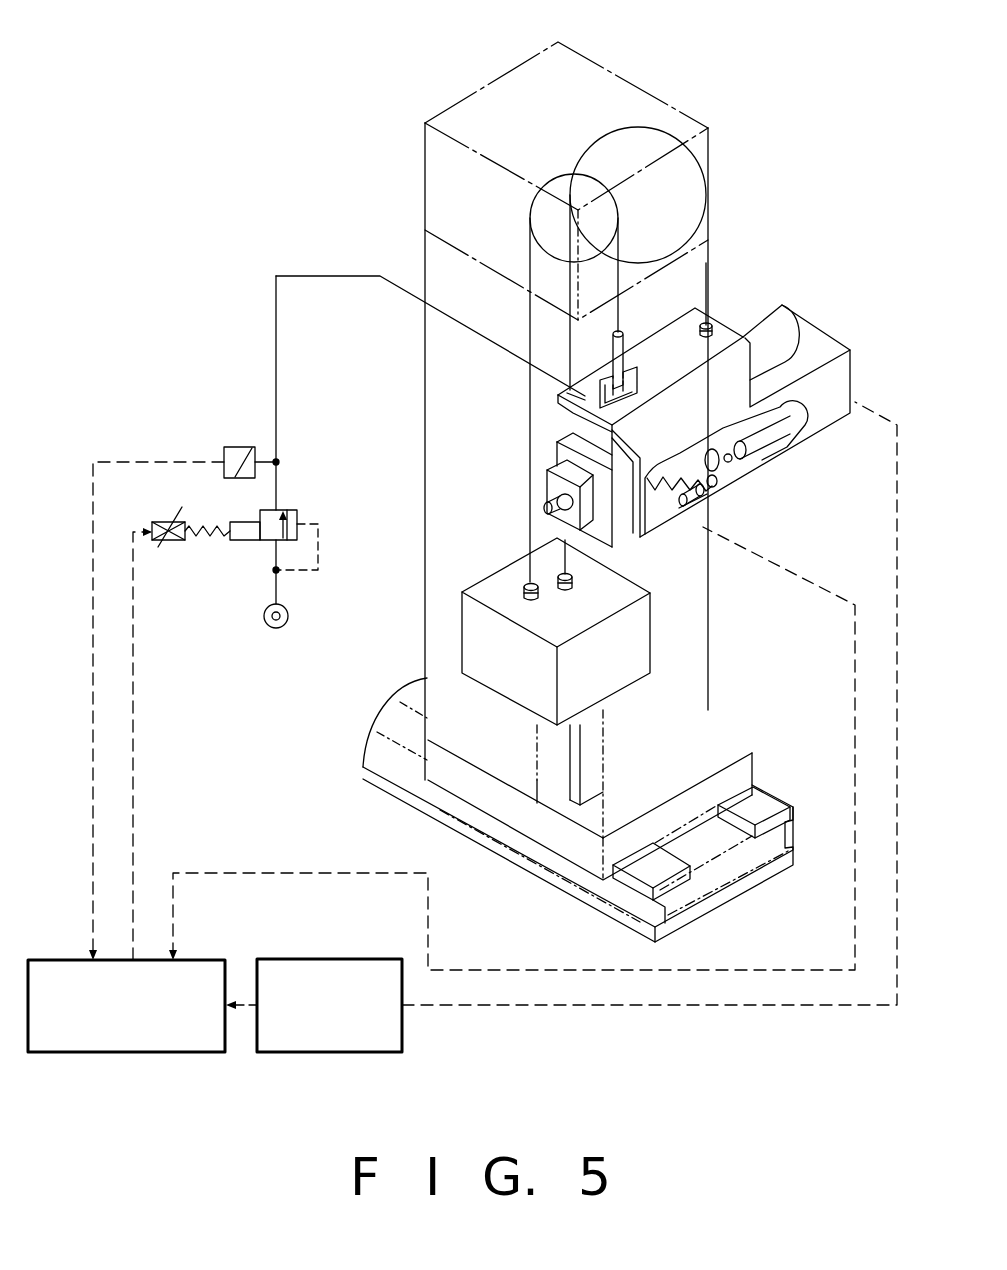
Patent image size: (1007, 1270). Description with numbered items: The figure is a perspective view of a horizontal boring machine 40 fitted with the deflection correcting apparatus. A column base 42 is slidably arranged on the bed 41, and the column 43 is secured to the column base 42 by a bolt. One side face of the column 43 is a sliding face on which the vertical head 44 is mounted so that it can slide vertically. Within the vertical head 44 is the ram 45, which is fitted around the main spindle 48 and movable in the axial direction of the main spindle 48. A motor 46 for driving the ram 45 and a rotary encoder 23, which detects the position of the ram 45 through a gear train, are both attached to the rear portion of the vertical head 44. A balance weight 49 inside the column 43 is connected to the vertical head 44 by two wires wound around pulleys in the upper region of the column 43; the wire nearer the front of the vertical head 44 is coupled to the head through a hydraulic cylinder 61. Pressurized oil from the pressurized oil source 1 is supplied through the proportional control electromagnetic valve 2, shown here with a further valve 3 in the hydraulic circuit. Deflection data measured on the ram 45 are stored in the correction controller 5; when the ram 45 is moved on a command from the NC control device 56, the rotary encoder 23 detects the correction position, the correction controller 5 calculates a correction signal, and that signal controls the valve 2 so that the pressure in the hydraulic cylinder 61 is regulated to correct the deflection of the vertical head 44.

The pressurized oil source 1 is at (288, 618).
The proportional control electromagnetic valve 2 is at (236, 541).
The flow control valve 3 is at (244, 447).
The correction controller 5 is at (170, 1053).
The rotary encoder 23 is at (712, 497).
The horizontal boring machine 40 is at (780, 266).
The bed 41 is at (743, 892).
The column base 42 is at (578, 850).
The column 43 is at (425, 252).
The vertical head 44 is at (840, 341).
The ram 45 is at (549, 478).
The motor 46 is at (783, 438).
The main spindle 48 is at (546, 512).
The balance weight 49 is at (487, 688).
The NC control device 56 is at (358, 1053).
The hydraulic cylinder 61 is at (638, 380).